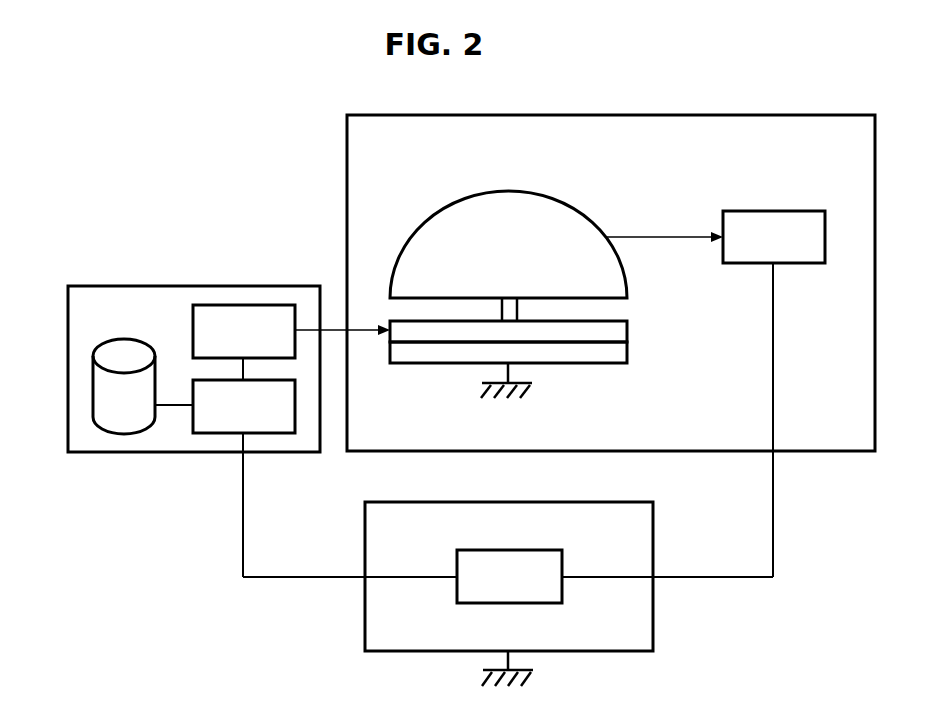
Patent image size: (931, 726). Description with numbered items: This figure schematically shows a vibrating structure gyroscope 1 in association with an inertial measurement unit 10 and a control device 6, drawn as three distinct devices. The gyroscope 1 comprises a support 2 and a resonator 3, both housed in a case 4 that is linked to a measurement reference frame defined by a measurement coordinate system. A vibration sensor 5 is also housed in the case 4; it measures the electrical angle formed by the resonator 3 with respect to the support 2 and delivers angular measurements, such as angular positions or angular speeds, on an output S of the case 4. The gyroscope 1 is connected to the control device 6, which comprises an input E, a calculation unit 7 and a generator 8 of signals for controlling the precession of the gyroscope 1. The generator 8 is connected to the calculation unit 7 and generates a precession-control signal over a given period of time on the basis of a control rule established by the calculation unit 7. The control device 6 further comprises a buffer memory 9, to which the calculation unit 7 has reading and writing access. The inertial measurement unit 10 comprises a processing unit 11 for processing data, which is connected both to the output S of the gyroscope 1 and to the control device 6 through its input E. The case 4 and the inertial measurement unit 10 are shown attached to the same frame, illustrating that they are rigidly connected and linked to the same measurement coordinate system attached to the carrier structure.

The vibrating structure gyroscope 1 is at (617, 115).
The support 2 is at (628, 331).
The resonator 3 is at (498, 273).
The case 4 is at (628, 352).
The vibration sensor 5 is at (764, 250).
The control device 6 is at (68, 369).
The calculation unit 7 is at (233, 420).
The generator 8 is at (233, 343).
The buffer memory 9 is at (114, 412).
The inertial measurement unit 10 is at (365, 610).
The processing unit 11 is at (497, 590).
The input E is at (241, 455).
The output S is at (775, 455).